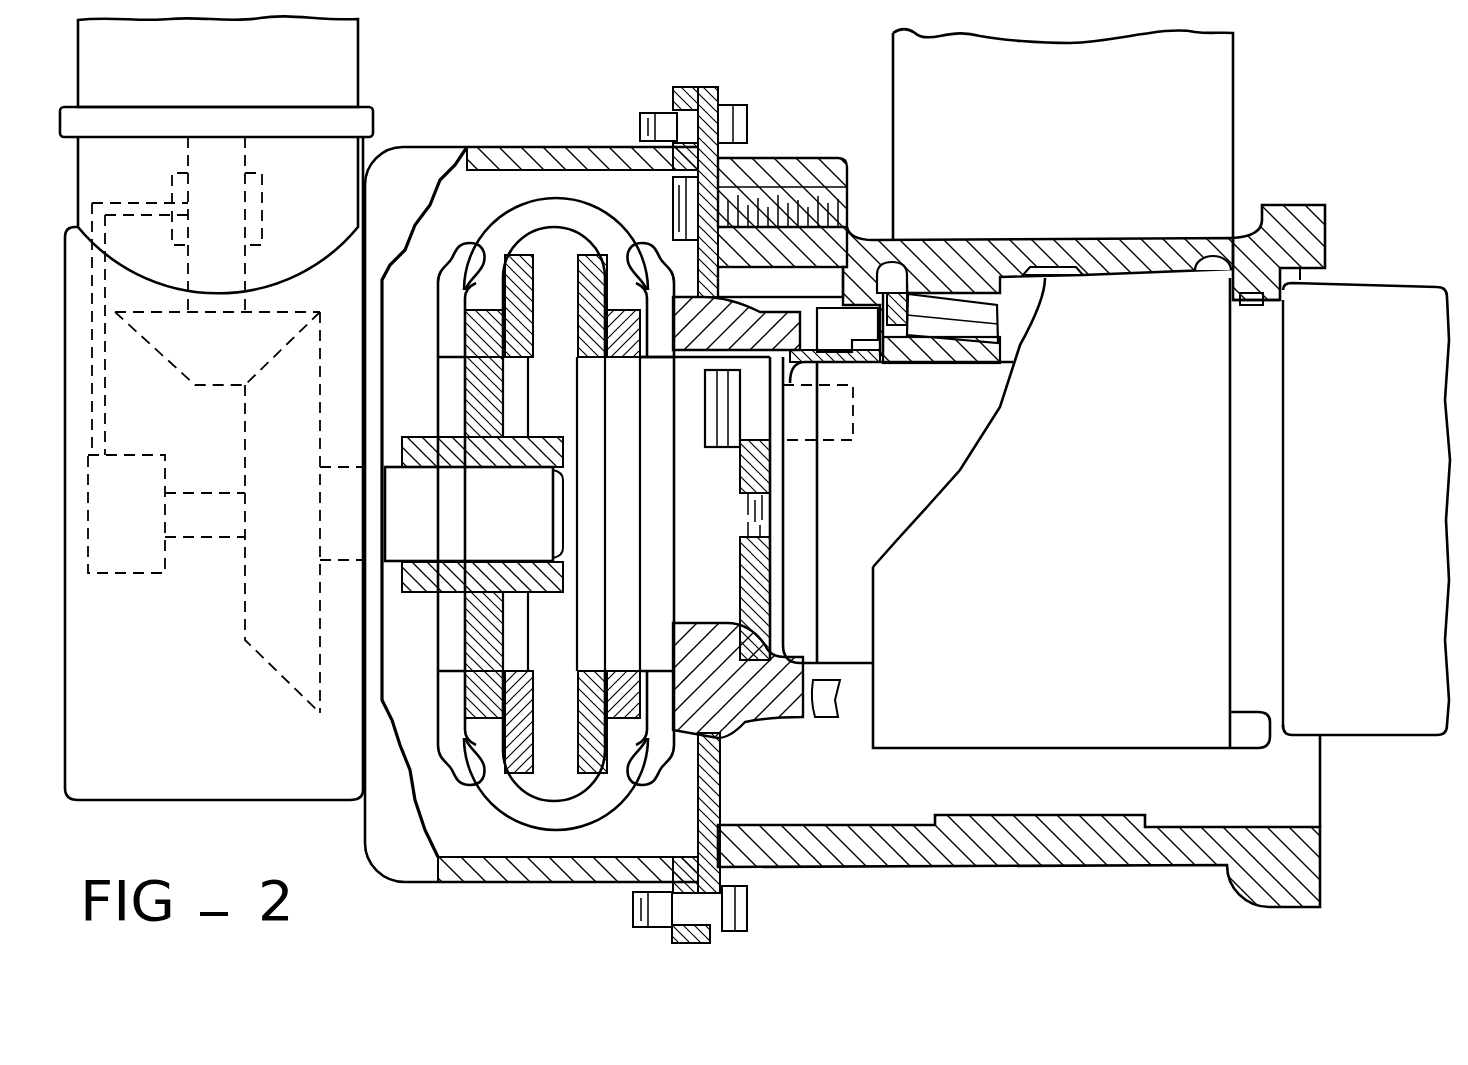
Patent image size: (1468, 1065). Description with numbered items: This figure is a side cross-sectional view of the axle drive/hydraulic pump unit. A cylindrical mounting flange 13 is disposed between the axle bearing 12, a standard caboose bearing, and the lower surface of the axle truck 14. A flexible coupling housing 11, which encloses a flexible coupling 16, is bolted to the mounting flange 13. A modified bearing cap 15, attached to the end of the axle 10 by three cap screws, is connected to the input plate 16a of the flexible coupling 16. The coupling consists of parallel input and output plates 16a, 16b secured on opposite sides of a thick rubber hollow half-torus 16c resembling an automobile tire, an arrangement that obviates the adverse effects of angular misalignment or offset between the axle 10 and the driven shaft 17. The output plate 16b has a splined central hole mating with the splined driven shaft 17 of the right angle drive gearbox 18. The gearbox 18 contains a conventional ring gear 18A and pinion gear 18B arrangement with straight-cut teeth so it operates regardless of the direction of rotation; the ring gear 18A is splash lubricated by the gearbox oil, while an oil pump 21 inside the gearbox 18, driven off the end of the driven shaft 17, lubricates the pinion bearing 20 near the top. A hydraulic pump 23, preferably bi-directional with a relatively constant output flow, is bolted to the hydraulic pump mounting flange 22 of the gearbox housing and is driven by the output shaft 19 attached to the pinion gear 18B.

The axle 10 is at (875, 504).
The flexible coupling housing 11 is at (540, 147).
The axle bearing 12 is at (1115, 402).
The mounting flange 13 is at (1300, 205).
The axle truck 14 is at (1100, 172).
The bearing cap 15 is at (737, 717).
The flexible coupling 16 is at (604, 200).
The input plate 16a is at (651, 764).
The output plate 16b is at (448, 764).
The rubber hollow half-torus 16c is at (571, 833).
The driven shaft 17 is at (455, 529).
The right angle drive gearbox 18 is at (186, 773).
The ring gear 18A is at (300, 332).
The pinion gear 18B is at (195, 395).
The output shaft 19 is at (246, 270).
The pinion bearing 20 is at (262, 204).
The oil pump 21 is at (152, 575).
The hydraulic pump mounting flange 22 is at (377, 122).
The hydraulic pump 23 is at (255, 82).